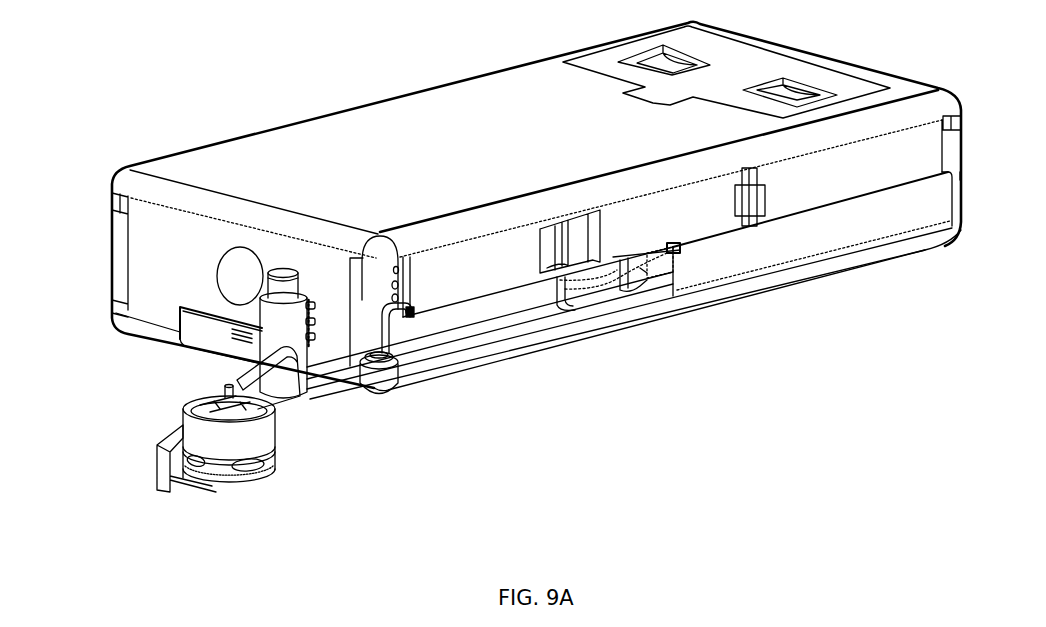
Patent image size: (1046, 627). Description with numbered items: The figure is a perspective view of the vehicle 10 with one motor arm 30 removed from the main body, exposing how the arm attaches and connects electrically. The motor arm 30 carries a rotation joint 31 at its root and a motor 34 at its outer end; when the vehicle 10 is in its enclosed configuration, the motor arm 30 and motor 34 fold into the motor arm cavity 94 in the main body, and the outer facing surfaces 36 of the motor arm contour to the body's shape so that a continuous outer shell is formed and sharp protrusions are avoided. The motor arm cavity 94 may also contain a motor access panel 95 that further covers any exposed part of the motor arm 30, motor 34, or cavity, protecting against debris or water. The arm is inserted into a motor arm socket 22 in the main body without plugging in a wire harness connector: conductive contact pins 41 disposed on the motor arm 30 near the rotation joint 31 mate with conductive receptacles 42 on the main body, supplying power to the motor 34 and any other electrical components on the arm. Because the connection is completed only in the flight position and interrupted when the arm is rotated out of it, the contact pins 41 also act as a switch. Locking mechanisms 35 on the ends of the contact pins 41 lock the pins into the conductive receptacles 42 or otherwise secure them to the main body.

The vehicle 10 is at (516, 210).
The motor arm 30 is at (174, 376).
The motor 34 is at (261, 469).
The rotation joint 31 is at (359, 411).
The locking mechanisms 35 is at (401, 387).
The conductive contact pins 41 is at (400, 424).
The motor arm socket 22 is at (475, 380).
The conductive receptacles 42 is at (498, 361).
The motor arm cavity 94 is at (648, 346).
The motor access panel 95 is at (713, 293).
The outer facing surfaces 36 is at (816, 269).